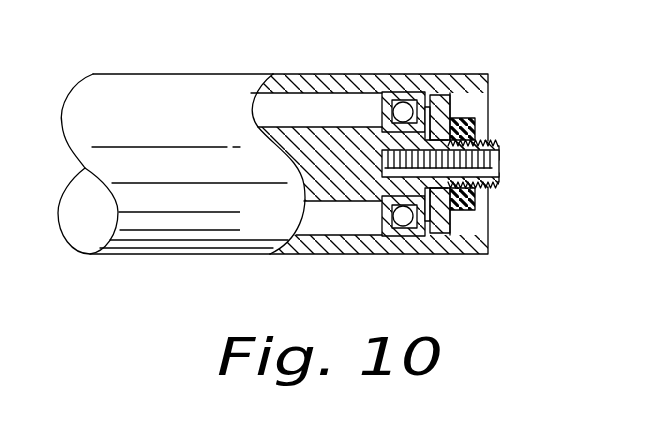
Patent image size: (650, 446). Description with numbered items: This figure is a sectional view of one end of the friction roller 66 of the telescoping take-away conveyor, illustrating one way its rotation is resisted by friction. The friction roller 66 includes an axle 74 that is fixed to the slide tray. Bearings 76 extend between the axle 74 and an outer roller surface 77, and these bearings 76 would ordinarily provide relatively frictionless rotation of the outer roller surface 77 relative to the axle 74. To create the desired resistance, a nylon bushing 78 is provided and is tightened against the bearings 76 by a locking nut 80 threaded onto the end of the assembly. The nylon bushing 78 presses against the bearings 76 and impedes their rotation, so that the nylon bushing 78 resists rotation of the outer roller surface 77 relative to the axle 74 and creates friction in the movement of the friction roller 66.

The friction roller 66 is at (512, 172).
The axle 74 is at (303, 140).
The bearings 76 is at (404, 108).
The outer roller surface 77 is at (202, 107).
The nylon bushing 78 is at (447, 232).
The locking nut 80 is at (470, 128).